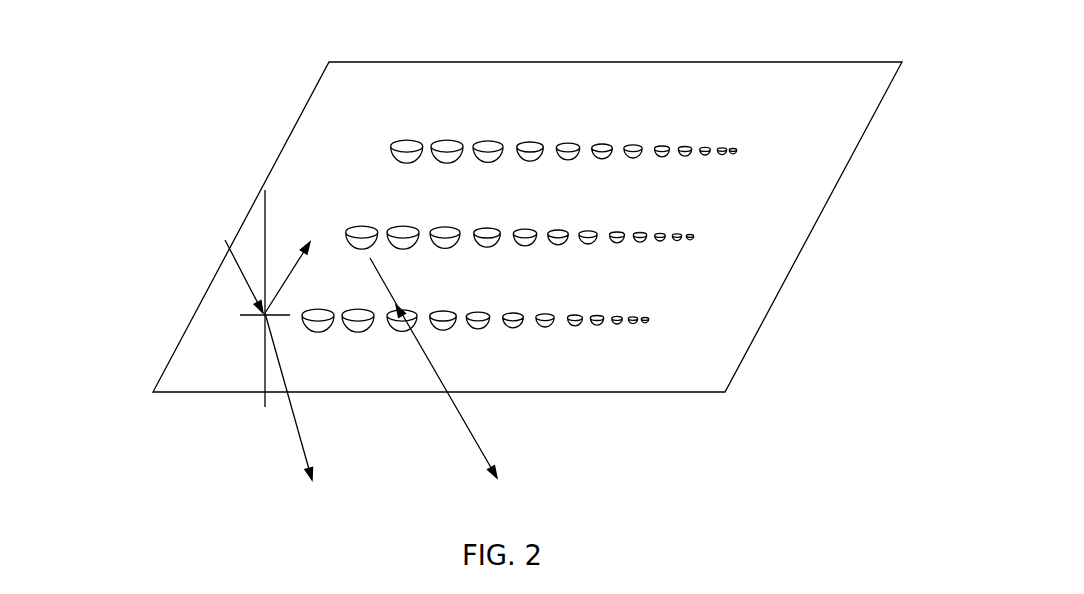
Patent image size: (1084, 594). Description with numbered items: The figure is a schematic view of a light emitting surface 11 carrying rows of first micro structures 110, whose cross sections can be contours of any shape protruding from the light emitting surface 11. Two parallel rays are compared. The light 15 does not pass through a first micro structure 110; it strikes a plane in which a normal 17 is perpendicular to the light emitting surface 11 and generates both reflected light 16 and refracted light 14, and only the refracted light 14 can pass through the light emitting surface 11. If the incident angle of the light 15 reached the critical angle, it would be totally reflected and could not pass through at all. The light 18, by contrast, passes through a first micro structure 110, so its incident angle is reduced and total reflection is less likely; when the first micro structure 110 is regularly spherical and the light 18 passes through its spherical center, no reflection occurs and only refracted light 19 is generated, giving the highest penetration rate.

The light emitting surface 11 is at (718, 232).
The first micro structure 110 is at (650, 318).
The refracted light 14 is at (303, 447).
The light 15 is at (243, 272).
The reflected light 16 is at (270, 300).
The normal 17 is at (265, 243).
The light 18 is at (383, 280).
The refracted light 19 is at (478, 442).